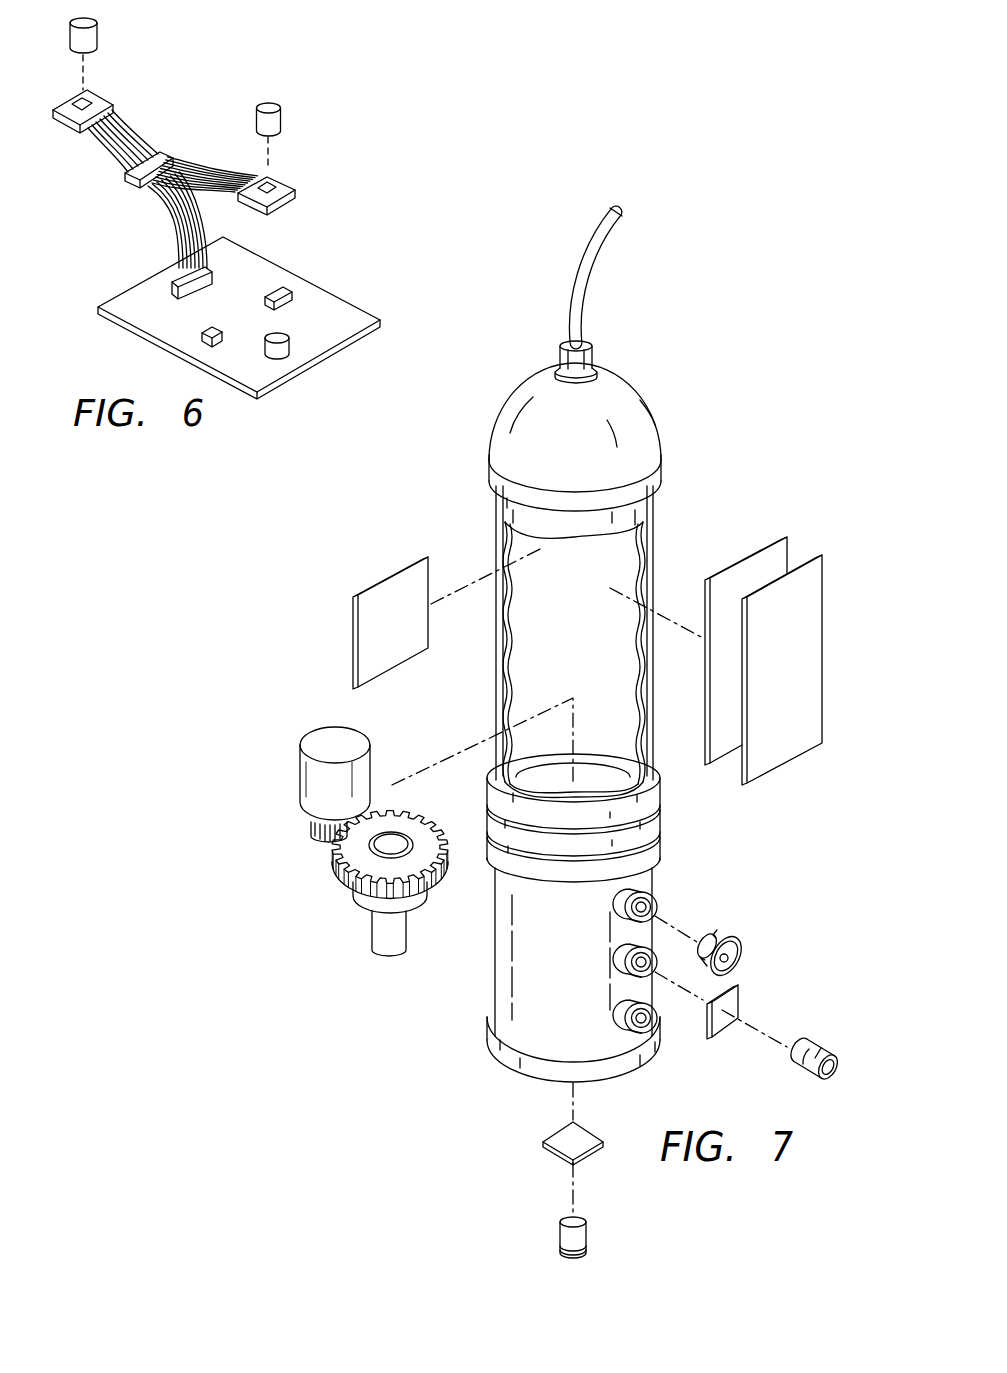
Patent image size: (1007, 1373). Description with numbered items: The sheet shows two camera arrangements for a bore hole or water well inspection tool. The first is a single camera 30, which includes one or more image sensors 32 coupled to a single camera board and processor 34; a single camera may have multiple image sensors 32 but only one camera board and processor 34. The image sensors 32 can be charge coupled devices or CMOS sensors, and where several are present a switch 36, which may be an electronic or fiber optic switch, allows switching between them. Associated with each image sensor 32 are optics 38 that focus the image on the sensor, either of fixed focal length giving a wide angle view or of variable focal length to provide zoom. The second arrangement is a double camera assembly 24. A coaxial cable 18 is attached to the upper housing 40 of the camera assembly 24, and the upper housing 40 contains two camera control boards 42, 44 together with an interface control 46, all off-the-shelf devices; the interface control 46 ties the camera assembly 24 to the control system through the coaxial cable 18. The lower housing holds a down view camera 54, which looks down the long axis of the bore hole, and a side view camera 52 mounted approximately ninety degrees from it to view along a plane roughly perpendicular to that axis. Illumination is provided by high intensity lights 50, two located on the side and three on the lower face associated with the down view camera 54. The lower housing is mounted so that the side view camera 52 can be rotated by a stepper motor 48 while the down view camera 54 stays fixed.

In FIG. 7, the coaxial cable 18 is at (604, 268).
In FIG. 7, the camera assembly 24 is at (500, 517).
In FIG. 6, the single camera 30 is at (384, 179).
In FIG. 6, the image sensor 32 is at (70, 101).
In FIG. 7, the image sensor 32 is at (490, 971).
In FIG. 6, the camera board and processor 34 is at (341, 303).
In FIG. 6, the switch 36 is at (162, 152).
In FIG. 6, the optics 38 is at (99, 37).
In FIG. 7, the optics 38 is at (813, 1044).
In FIG. 7, the upper housing 40 is at (637, 378).
In FIG. 7, the camera control board 42 is at (735, 551).
In FIG. 7, the camera control board 44 is at (780, 771).
In FIG. 7, the interface control 46 is at (382, 573).
In FIG. 7, the stepper motor 48 is at (290, 790).
In FIG. 7, the high intensity light 50 is at (738, 930).
In FIG. 7, the side view camera 52 is at (723, 1033).
In FIG. 7, the down view camera 54 is at (551, 1135).